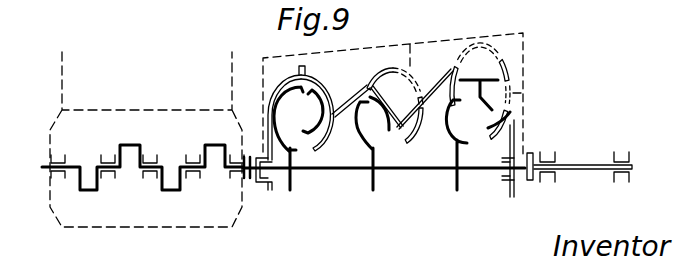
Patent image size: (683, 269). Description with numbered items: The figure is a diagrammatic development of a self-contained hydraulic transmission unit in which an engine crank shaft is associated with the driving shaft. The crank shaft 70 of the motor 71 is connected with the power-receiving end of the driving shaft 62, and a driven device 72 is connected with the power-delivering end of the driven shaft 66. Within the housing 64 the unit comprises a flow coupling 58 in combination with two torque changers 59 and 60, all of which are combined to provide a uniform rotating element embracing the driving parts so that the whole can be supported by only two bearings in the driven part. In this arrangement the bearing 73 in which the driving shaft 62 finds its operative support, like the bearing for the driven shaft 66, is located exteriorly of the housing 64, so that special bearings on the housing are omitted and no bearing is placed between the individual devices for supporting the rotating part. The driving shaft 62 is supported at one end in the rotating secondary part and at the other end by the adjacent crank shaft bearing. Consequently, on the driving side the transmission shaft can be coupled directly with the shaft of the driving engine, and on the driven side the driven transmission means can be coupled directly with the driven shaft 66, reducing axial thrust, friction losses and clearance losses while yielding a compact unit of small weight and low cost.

The flow coupling 58 is at (320, 80).
The torque changer 59 is at (412, 73).
The torque changer 60 is at (508, 67).
The driving shaft 62 is at (415, 172).
The housing 64 is at (377, 47).
The driven shaft 66 is at (525, 180).
The crank shaft 70 is at (90, 190).
The motor 71 is at (65, 80).
The driven device 72 is at (588, 170).
The bearing 73 is at (243, 187).